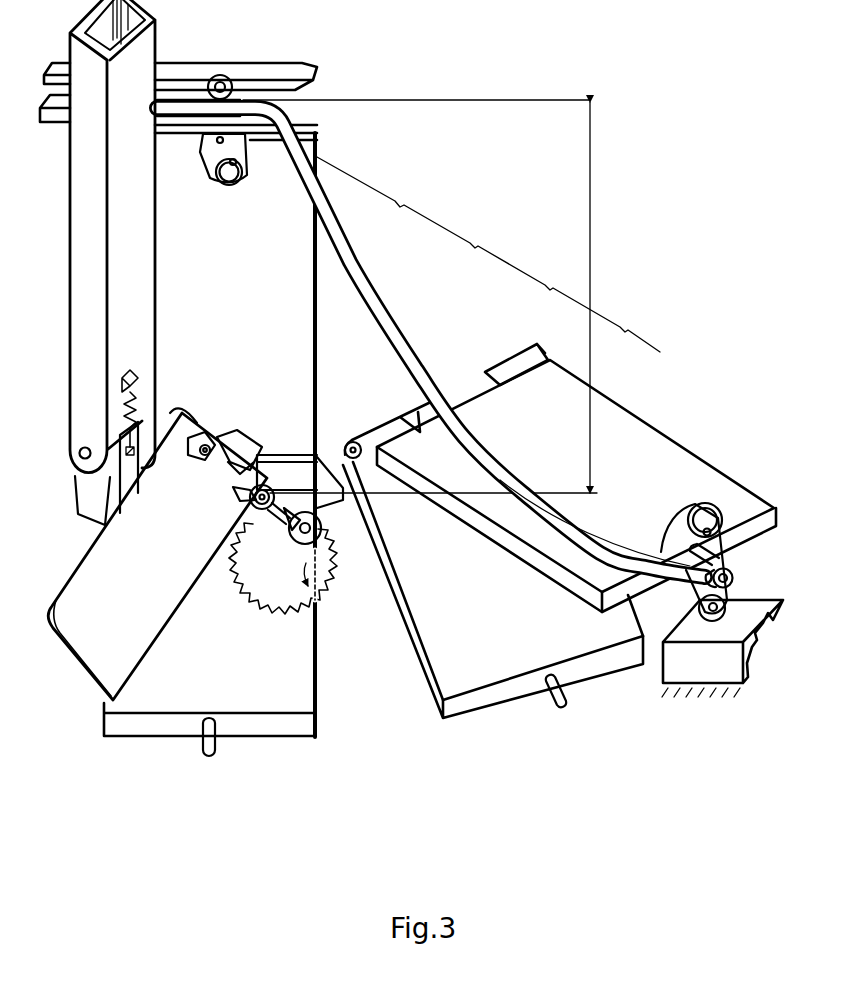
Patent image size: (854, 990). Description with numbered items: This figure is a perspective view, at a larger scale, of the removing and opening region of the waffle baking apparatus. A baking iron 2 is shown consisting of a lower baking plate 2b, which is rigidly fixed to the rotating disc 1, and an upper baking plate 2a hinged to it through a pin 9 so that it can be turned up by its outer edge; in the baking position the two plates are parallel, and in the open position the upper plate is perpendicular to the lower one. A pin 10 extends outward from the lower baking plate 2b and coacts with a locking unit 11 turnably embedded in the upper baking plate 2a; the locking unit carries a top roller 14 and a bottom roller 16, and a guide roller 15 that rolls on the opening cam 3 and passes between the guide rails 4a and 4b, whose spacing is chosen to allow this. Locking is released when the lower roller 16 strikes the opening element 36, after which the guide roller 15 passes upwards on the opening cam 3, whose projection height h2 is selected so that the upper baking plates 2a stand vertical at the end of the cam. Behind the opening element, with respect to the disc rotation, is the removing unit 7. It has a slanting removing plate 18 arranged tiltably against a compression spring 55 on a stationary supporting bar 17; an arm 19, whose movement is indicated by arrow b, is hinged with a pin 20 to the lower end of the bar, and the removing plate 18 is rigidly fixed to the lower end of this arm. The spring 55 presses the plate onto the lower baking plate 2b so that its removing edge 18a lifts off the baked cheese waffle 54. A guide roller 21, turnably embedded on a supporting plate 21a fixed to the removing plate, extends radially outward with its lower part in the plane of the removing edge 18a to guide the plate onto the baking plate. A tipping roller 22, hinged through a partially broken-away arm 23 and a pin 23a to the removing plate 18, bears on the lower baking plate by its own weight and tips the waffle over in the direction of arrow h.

The disc 1 is at (527, 310).
The baking iron 2 is at (108, 742).
The upper baking plate 2a is at (297, 241).
The lower baking plate 2b is at (165, 705).
The opening cam 3 is at (362, 297).
The guide rail 4a is at (265, 112).
The guide rail 4b is at (192, 78).
The removing unit 7 is at (72, 676).
The pin 9 is at (352, 440).
The pin 10 is at (216, 745).
The locking unit 11 is at (240, 197).
The roller 14 is at (703, 510).
The guide roller 15 is at (225, 76).
The roller 16 is at (692, 616).
The supporting bar 17 is at (150, 283).
The removing plate 18 is at (90, 590).
The removing edge 18a is at (140, 660).
The arm 19 is at (130, 490).
The pin 20 is at (82, 449).
The guide roller 21 is at (268, 485).
The supporting plate 21a is at (237, 497).
The tipping roller 22 is at (298, 545).
The arm 23 is at (237, 447).
The pin 23a is at (205, 440).
The opening element 36 is at (693, 672).
The baked cheese waffle 54 is at (320, 603).
The compression spring 55 is at (142, 415).
The arrow h is at (325, 572).
The projection height h2 is at (584, 285).
The arrow b is at (93, 488).